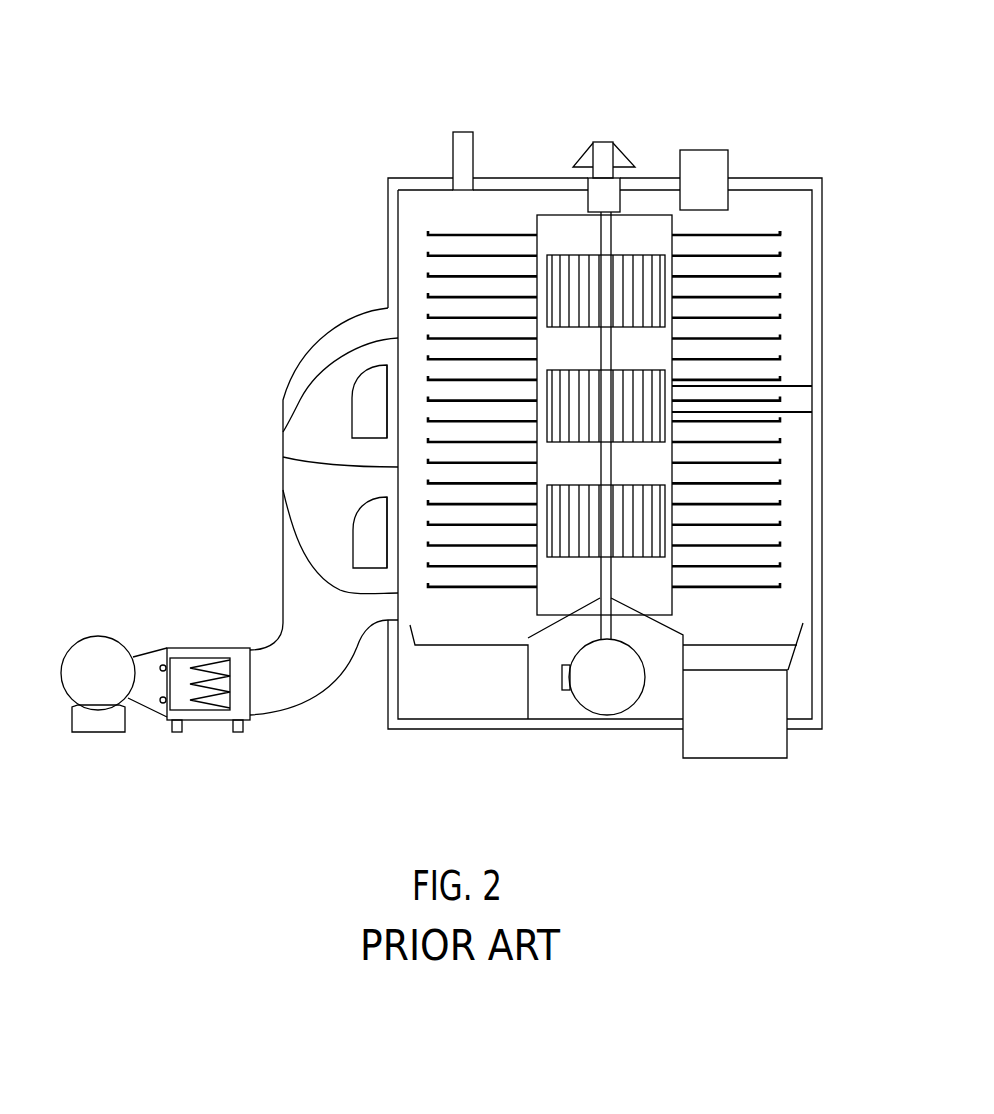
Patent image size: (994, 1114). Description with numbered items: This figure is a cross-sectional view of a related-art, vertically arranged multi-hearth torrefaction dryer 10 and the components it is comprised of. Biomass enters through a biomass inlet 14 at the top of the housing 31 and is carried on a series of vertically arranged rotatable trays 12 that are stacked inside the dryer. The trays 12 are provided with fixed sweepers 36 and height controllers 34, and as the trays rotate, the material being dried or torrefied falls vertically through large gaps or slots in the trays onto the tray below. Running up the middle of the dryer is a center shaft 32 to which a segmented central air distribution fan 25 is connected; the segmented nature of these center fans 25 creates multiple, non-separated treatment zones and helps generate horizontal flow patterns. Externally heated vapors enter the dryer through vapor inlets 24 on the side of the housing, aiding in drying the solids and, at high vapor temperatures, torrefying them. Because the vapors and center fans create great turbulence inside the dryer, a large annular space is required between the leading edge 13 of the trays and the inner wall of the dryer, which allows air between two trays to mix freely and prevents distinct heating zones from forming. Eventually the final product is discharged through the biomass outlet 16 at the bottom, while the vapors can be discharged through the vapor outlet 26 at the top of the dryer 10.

The multi-hearth torrefaction dryer 10 is at (393, 63).
The rotatable trays 12 is at (758, 255).
The leading edge 13 is at (780, 253).
The biomass inlet 14 is at (705, 150).
The biomass outlet 16 is at (710, 752).
The vapor inlets 24 is at (283, 490).
The central air distribution fan 25 is at (632, 255).
The vapor outlet 26 is at (453, 150).
The housing 31 is at (388, 203).
The center shaft 32 is at (600, 237).
The height controllers 34 is at (812, 387).
The fixed sweepers 36 is at (812, 413).